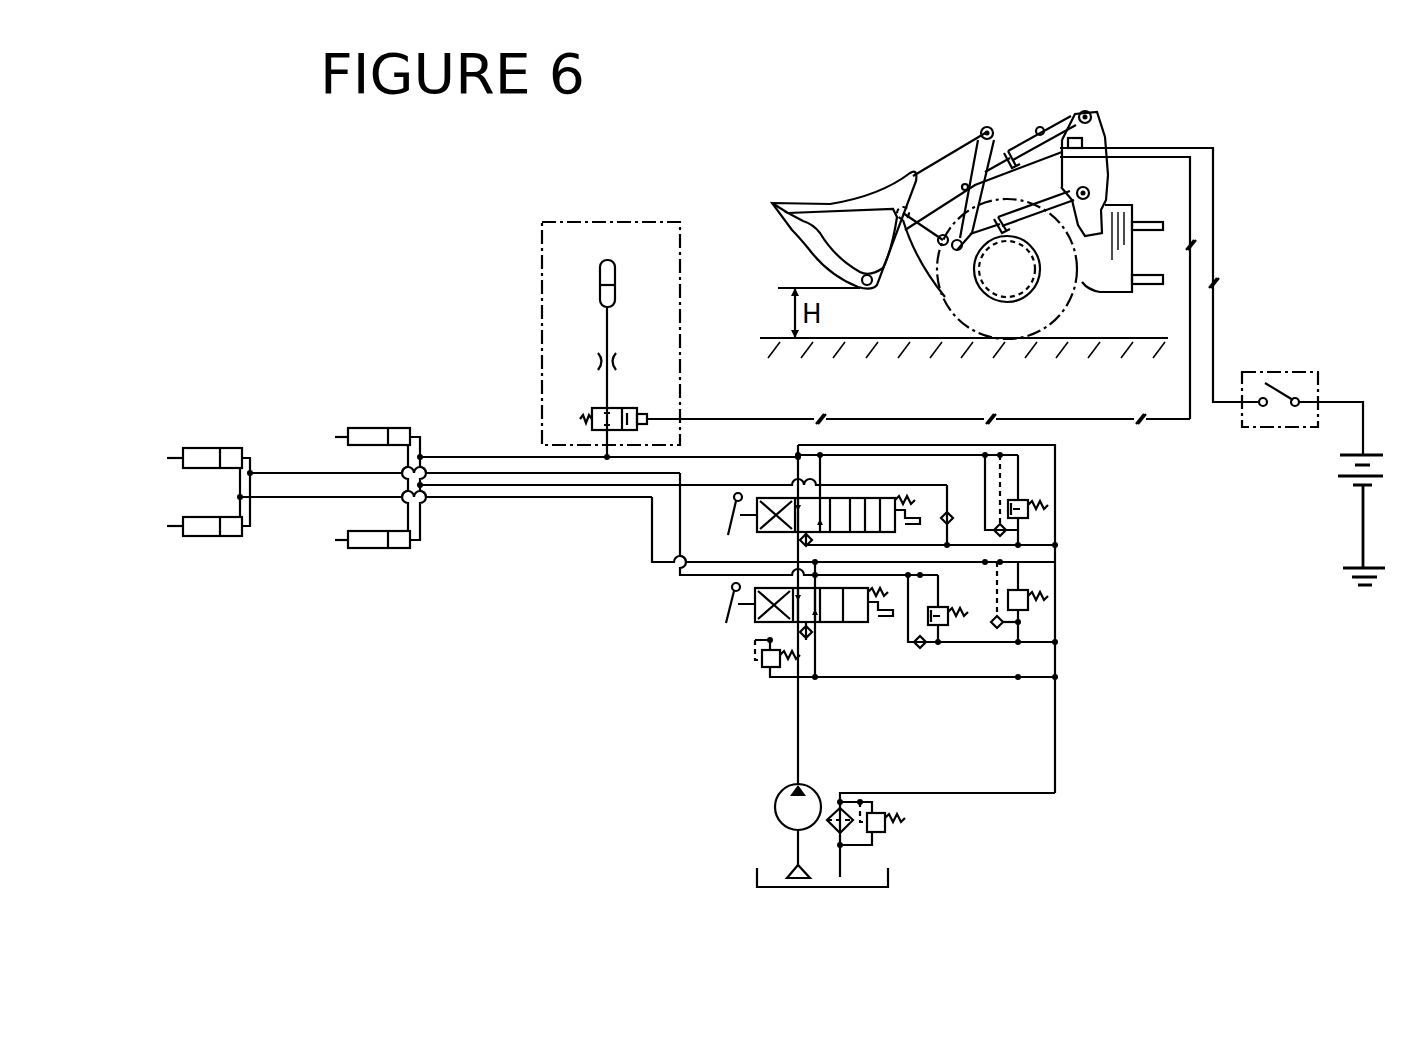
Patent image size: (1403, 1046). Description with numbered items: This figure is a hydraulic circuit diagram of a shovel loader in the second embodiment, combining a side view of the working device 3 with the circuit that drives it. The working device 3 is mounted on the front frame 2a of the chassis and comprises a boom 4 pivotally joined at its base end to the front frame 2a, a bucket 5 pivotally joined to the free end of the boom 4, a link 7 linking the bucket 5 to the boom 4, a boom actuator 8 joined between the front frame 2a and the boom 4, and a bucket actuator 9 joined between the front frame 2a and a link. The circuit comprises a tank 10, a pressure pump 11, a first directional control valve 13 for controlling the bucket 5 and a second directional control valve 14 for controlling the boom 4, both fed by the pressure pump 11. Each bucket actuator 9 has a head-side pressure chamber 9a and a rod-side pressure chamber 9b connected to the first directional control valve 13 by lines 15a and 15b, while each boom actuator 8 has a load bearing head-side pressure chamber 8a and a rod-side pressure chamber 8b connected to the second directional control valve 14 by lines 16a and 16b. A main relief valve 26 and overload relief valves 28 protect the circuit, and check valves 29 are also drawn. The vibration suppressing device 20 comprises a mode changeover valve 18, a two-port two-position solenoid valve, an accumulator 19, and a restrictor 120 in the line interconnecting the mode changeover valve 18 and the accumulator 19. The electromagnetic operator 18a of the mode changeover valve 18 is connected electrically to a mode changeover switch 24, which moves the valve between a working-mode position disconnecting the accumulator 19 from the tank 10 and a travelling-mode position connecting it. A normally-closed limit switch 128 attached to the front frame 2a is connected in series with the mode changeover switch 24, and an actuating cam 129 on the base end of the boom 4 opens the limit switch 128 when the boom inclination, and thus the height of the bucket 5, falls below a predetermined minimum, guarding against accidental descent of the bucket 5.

The front frame 2a is at (1107, 133).
The working device 3 is at (925, 168).
The boom 4 is at (1015, 152).
The bucket 5 is at (840, 203).
The link 7 is at (985, 128).
The boom actuator 8 is at (376, 427).
The head-side pressure chamber 8a is at (405, 427).
The rod-side pressure chamber 8b is at (353, 427).
The bucket actuator 9 is at (207, 447).
The head-side pressure chamber 9a is at (232, 449).
The rod-side pressure chamber 9b is at (195, 449).
The tank 10 is at (757, 880).
The pressure pump 11 is at (810, 788).
The first directional control valve 13 is at (855, 622).
The second directional control valve 14 is at (890, 498).
The line 15a is at (298, 471).
The line 15b is at (297, 499).
The line 16a is at (475, 456).
The line 16b is at (477, 498).
The mode changeover valve 18 is at (630, 408).
The electromagnetic operator 18a is at (648, 418).
The accumulator 19 is at (617, 268).
The vibration suppressing device 20 is at (622, 214).
The mode changeover switch 24 is at (1302, 372).
The main relief valve 26 is at (762, 668).
The overload relief valve 28 is at (1035, 508).
The check valve 29 is at (1008, 532).
The restrictor 120 is at (618, 360).
The limit switch 128 is at (1065, 162).
The actuating cam 129 is at (1038, 127).